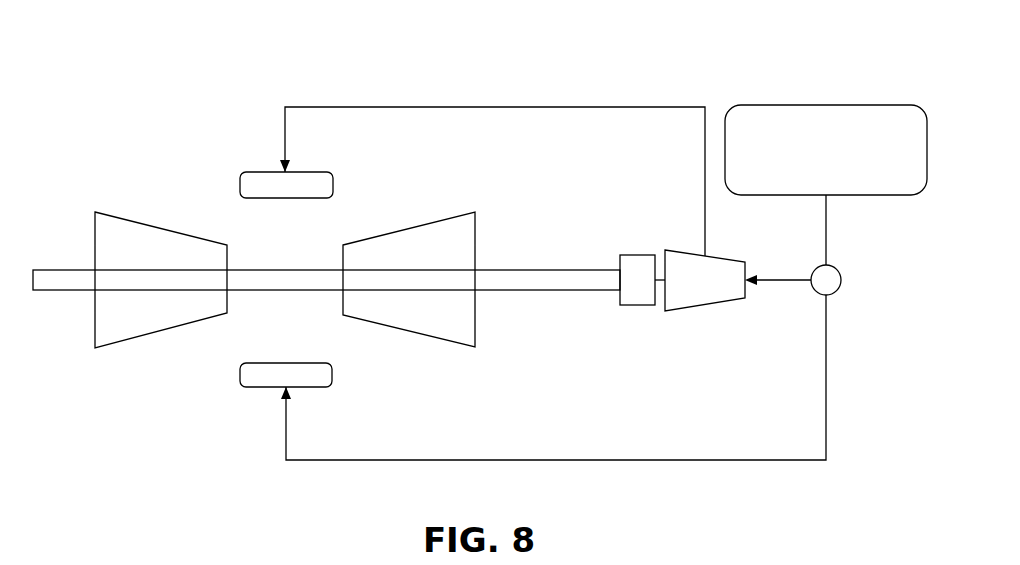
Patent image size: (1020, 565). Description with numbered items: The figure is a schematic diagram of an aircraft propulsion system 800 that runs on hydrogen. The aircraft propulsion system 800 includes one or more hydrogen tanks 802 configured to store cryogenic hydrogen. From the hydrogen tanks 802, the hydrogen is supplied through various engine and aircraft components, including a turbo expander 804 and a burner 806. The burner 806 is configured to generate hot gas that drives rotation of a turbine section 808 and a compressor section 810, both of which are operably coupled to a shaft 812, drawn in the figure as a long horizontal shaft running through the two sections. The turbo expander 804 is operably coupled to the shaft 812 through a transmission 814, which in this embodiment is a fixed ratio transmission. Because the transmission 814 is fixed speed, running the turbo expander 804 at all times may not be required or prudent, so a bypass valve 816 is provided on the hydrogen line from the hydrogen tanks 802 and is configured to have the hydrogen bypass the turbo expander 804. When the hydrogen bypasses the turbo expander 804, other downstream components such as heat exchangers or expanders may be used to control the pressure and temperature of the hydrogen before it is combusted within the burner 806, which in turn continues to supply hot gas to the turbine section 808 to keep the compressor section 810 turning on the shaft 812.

The aircraft propulsion system 800 is at (108, 47).
The hydrogen tank 802 is at (826, 150).
The turbo expander 804 is at (717, 306).
The burner 806 is at (263, 172).
The turbine section 808 is at (448, 340).
The compressor section 810 is at (172, 328).
The shaft 812 is at (570, 291).
The transmission 814 is at (640, 255).
The bypass valve 816 is at (838, 291).